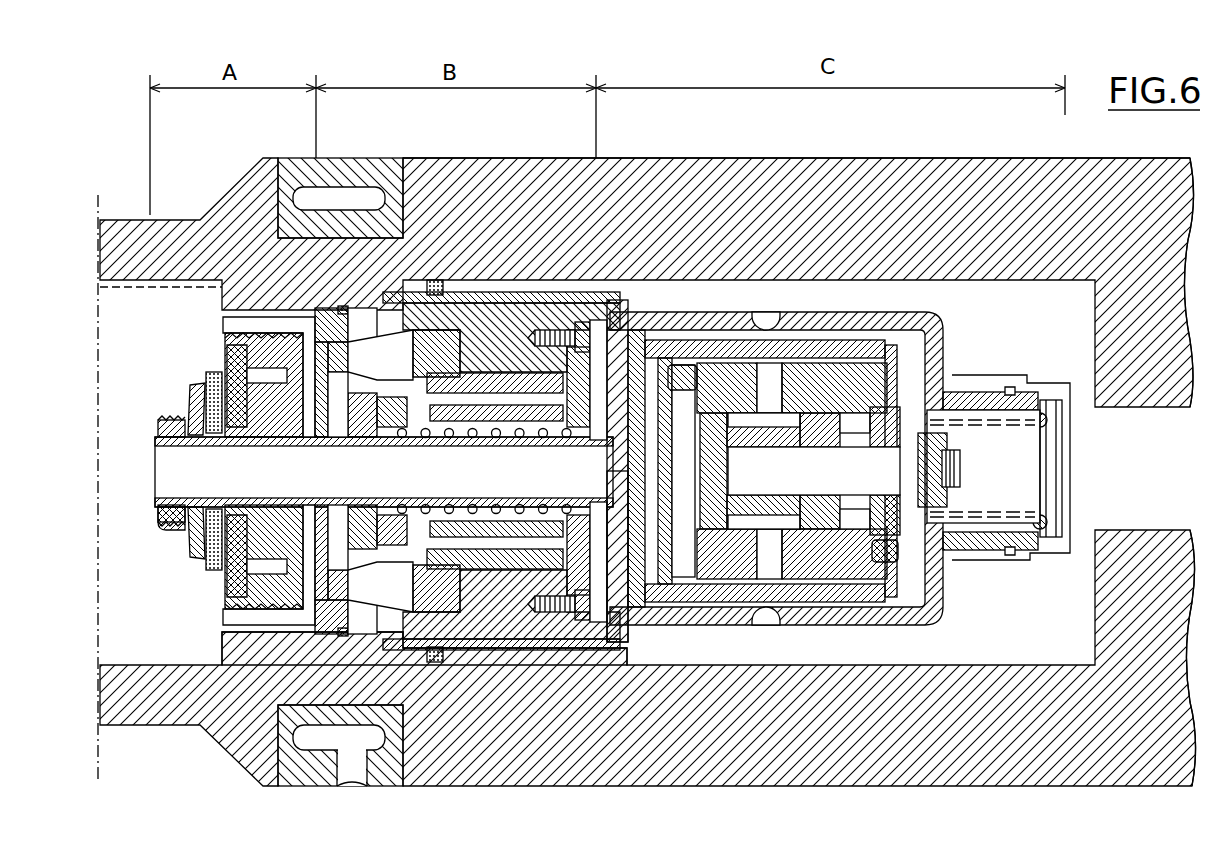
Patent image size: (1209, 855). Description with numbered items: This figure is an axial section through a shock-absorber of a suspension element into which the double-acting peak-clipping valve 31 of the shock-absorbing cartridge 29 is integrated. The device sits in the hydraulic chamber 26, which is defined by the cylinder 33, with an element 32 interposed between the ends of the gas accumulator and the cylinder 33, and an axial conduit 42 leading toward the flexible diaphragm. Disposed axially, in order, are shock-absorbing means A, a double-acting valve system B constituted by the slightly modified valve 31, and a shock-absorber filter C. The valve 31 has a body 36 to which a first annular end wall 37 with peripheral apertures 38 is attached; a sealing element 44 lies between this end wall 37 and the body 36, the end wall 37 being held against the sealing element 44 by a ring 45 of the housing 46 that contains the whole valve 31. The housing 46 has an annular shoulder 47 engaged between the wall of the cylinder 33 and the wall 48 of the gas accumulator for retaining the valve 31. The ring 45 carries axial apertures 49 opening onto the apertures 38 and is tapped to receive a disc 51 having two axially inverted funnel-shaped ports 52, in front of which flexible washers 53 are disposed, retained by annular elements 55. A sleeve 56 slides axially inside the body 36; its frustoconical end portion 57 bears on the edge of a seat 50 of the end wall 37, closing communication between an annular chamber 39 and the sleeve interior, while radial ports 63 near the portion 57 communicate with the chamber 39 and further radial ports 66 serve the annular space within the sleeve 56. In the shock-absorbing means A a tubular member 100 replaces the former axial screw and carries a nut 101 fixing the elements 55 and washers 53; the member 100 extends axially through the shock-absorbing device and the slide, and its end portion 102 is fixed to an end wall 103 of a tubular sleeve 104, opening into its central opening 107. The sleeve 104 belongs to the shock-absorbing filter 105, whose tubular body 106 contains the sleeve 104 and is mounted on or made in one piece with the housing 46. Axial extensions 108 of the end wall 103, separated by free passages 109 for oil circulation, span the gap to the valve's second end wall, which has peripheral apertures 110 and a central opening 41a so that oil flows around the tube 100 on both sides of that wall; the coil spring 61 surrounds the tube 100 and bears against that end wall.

The hydraulic chamber 26 is at (156, 653).
The shock-absorbing cartridge 29 is at (148, 565).
The peak-clipping valve 31 is at (492, 650).
The element 32 is at (290, 160).
The cylinder 33 is at (126, 712).
The body 36 is at (487, 325).
The first annular end wall 37 is at (333, 632).
The peripheral apertures 38 is at (352, 330).
The annular chamber 39 is at (368, 335).
The central opening 41a is at (600, 492).
The axial conduit 42 is at (1162, 437).
The sealing element 44 is at (352, 628).
The ring 45 is at (238, 633).
The housing 46 is at (277, 697).
The annular shoulder 47 is at (358, 243).
The wall of the gas accumulator 48 is at (540, 160).
The axial apertures 49 is at (222, 320).
The seat 50 is at (325, 330).
The disc 51 is at (196, 412).
The funnel-shaped ports 52 is at (226, 358).
The flexible washers 53 is at (167, 421).
The annular elements 55 is at (210, 400).
The sleeve 56 is at (433, 392).
The frustoconical end portion 57 is at (352, 325).
The coil spring 61 is at (440, 440).
The radial ports 63 is at (428, 366).
The radial ports 66 is at (400, 625).
The tubular member 100 is at (384, 472).
The nut 101 is at (166, 517).
The end portion 102 is at (598, 450).
The end wall 103 is at (694, 378).
The tubular sleeve 104 is at (712, 330).
The shock-absorbing filter 105 is at (842, 305).
The tubular body 106 is at (906, 316).
The central opening 107 is at (735, 498).
The axial extensions 108 is at (628, 530).
The free passages 109 is at (614, 402).
The peripheral apertures 110 is at (600, 386).